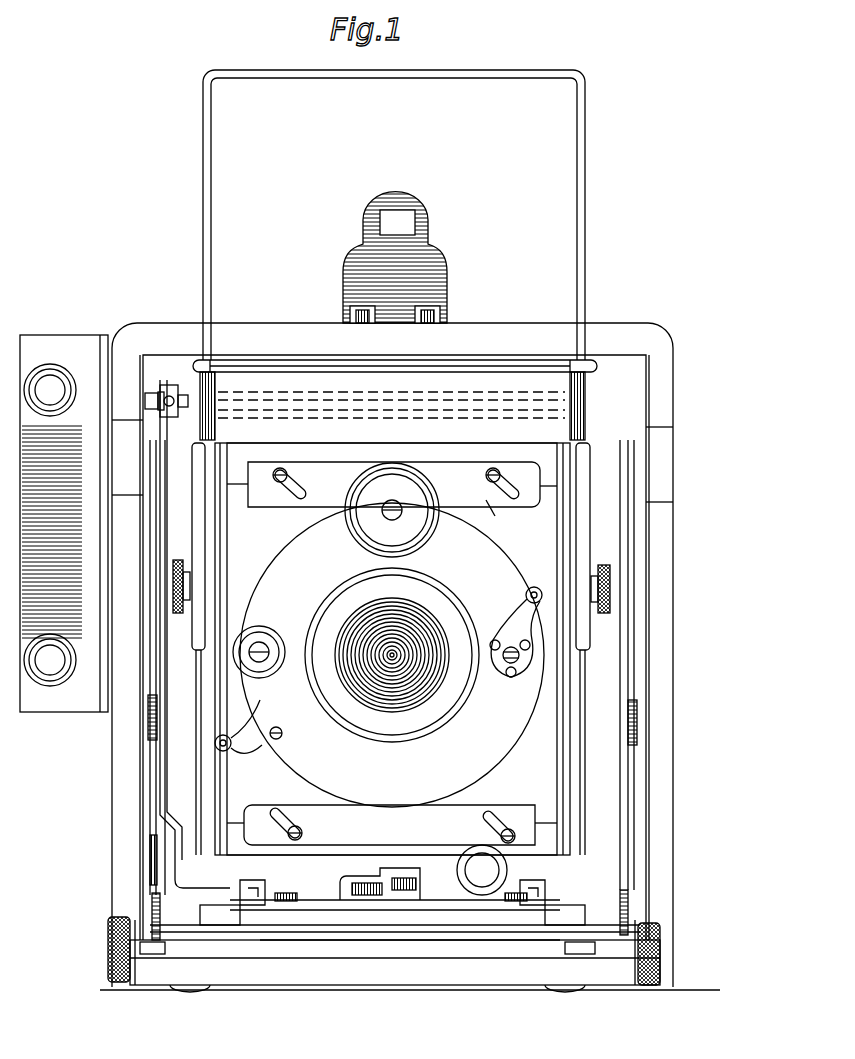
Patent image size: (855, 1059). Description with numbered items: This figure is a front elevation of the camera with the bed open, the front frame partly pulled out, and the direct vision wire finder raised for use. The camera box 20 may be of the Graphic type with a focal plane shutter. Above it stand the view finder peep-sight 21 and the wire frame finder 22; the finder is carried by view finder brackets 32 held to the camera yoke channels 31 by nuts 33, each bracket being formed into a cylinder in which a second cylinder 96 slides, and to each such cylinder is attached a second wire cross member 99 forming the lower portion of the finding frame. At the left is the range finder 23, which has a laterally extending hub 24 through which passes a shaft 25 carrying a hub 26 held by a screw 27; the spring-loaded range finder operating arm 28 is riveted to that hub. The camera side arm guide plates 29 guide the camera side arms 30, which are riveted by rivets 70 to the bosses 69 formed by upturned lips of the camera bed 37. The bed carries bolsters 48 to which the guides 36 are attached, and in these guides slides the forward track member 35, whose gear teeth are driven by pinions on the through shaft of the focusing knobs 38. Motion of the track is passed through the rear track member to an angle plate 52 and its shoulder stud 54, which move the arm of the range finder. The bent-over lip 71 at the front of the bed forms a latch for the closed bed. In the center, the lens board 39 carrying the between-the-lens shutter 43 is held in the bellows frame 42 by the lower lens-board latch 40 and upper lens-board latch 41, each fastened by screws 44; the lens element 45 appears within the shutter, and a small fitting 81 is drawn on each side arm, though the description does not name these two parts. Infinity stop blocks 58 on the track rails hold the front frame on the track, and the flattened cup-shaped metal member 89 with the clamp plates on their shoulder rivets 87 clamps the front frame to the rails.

The camera box 20 is at (673, 410).
The view finder peep-sight 21 is at (430, 262).
The wire frame finder 22 is at (470, 72).
The range finder 23 is at (55, 345).
The hub 24 is at (145, 400).
The shaft 25 is at (180, 392).
The hub 26 is at (170, 385).
The screw 27 is at (178, 410).
The range finder operating arm 28 is at (160, 540).
The camera side arm guide plates 29 is at (150, 670).
The camera side arms 30 is at (165, 848).
The camera yoke channels 31 is at (580, 690).
The view finder brackets 32 is at (197, 630).
The nuts 33 is at (173, 585).
The forward track member 35 is at (260, 932).
The guides 36 is at (215, 905).
The camera bed 37 is at (462, 940).
The focusing knobs 38 is at (108, 945).
The lens board 39 is at (548, 508).
The lower lens-board latch 40 is at (472, 812).
The upper lens-board latch 41 is at (503, 517).
The bellows frame 42 is at (550, 470).
The between-the-lens shutter 43 is at (490, 752).
The screws 44 is at (283, 468).
The lens 45 is at (445, 610).
The camera bed bolsters 48 is at (598, 942).
The angle plate 52 is at (210, 888).
The shoulder stud 54 is at (150, 860).
The infinity stop blocks 58 is at (255, 880).
The bosses 69 is at (143, 900).
The rivets 70 is at (620, 905).
The bent-over lip 71 is at (395, 958).
The knurled screw 81 is at (148, 715).
The shoulder rivets 87 is at (285, 893).
The metal member 89 is at (330, 892).
The second cylinder 96 is at (215, 382).
The second wire cross member 99 is at (420, 360).